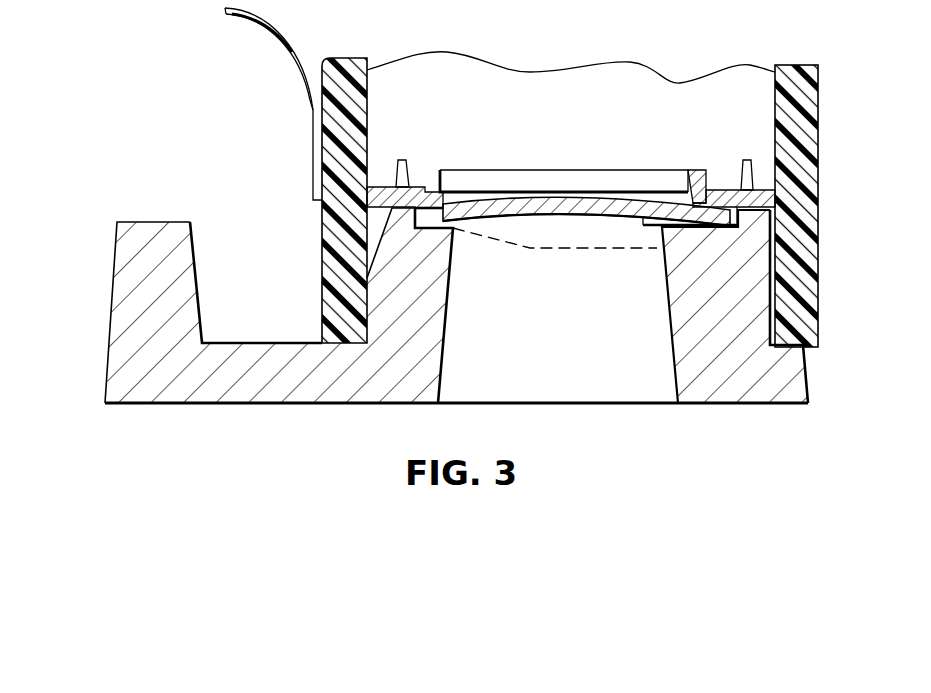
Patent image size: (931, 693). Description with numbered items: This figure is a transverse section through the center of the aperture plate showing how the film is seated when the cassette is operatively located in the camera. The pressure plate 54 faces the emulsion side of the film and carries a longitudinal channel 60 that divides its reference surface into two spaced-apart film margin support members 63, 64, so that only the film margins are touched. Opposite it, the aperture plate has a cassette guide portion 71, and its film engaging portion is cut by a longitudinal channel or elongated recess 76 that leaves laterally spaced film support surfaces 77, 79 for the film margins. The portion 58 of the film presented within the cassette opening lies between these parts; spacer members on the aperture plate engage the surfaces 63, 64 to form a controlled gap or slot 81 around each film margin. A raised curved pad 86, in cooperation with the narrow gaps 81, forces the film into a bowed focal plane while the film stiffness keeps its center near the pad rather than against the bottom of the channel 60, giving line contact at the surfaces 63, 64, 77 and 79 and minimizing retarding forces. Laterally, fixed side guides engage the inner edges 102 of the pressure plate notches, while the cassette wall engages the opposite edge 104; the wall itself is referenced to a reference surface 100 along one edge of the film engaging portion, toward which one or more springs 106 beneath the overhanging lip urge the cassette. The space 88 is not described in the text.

The pressure plate 54 is at (700, 175).
The portion of the film 58 is at (552, 205).
The longitudinal channel 60 is at (448, 200).
The film margin support member 63 is at (420, 205).
The film margin support member 64 is at (705, 205).
The cassette guide portion 71 is at (112, 304).
The longitudinal channel or elongated recess 76 is at (547, 250).
The film support surface 77 is at (428, 240).
The film support surface 79 is at (675, 250).
The controlled gap or slot 81 is at (405, 198).
The pad 86 is at (612, 232).
The annular gap 88 is at (270, 300).
The reference surface 100 is at (322, 300).
The inner edge 102 is at (765, 180).
The opposite edge 104 is at (322, 192).
The spring 106 is at (300, 38).